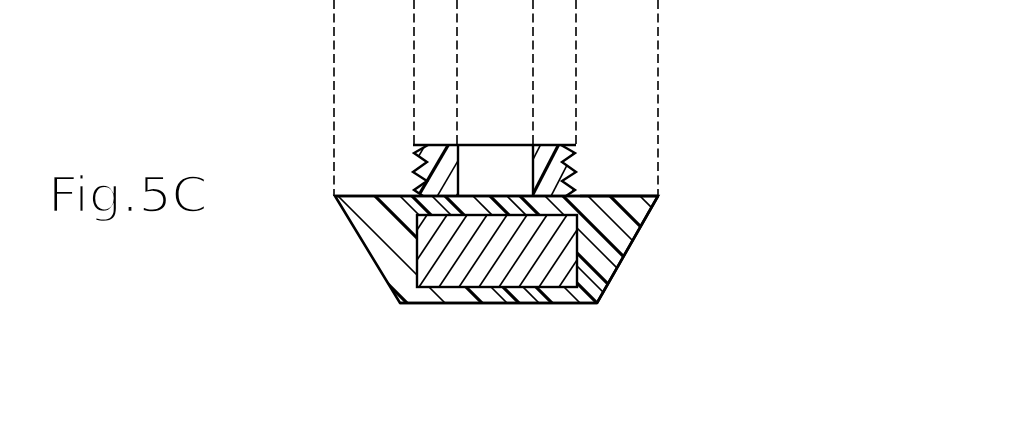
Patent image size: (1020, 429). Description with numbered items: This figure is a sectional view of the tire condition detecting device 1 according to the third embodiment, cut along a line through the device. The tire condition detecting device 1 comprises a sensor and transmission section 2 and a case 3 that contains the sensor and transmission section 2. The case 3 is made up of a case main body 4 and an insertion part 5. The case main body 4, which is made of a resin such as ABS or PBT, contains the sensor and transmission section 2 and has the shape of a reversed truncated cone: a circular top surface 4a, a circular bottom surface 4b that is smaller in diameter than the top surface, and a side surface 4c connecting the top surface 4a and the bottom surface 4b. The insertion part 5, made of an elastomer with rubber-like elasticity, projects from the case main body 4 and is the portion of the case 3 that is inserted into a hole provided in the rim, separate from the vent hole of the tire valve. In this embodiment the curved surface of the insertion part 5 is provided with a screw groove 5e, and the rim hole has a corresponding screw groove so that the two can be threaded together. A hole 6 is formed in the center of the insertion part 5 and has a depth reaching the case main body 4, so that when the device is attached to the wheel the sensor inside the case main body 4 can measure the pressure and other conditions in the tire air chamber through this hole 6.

The tire condition detecting device 1 is at (403, 111).
The sensor and transmission section 2 is at (580, 305).
The case 3 is at (658, 196).
The case main body 4 is at (380, 253).
The top surface 4a is at (618, 184).
The bottom surface 4b is at (490, 305).
The side surface 4c is at (622, 250).
The insertion part 5 is at (414, 150).
The screw groove 5e is at (414, 172).
The hole 6 is at (511, 145).